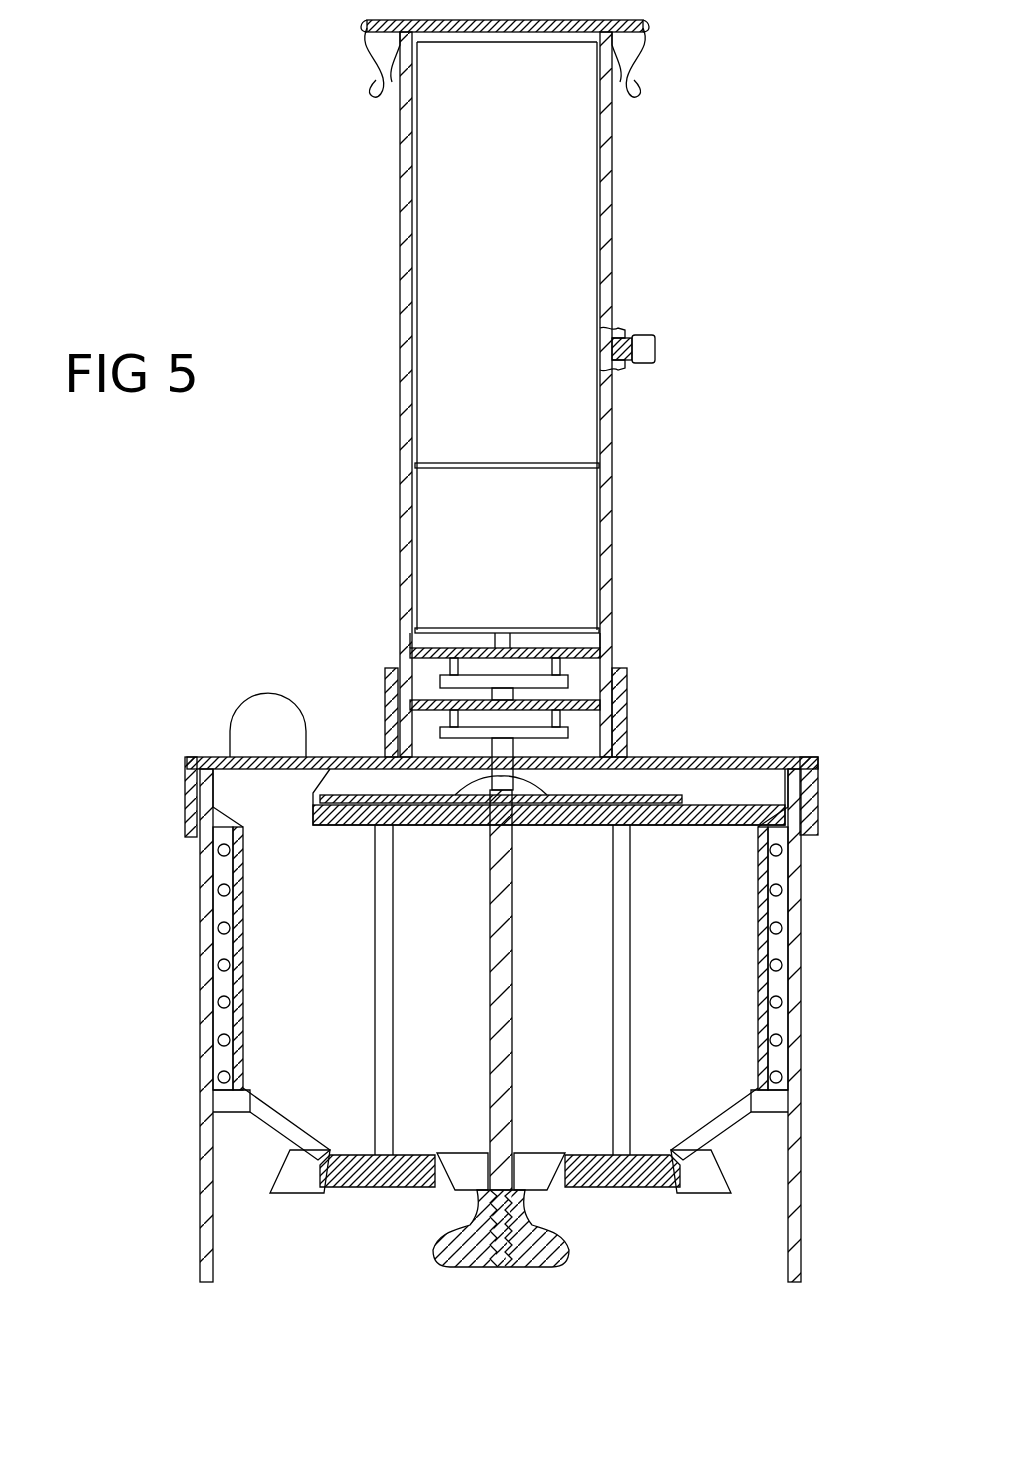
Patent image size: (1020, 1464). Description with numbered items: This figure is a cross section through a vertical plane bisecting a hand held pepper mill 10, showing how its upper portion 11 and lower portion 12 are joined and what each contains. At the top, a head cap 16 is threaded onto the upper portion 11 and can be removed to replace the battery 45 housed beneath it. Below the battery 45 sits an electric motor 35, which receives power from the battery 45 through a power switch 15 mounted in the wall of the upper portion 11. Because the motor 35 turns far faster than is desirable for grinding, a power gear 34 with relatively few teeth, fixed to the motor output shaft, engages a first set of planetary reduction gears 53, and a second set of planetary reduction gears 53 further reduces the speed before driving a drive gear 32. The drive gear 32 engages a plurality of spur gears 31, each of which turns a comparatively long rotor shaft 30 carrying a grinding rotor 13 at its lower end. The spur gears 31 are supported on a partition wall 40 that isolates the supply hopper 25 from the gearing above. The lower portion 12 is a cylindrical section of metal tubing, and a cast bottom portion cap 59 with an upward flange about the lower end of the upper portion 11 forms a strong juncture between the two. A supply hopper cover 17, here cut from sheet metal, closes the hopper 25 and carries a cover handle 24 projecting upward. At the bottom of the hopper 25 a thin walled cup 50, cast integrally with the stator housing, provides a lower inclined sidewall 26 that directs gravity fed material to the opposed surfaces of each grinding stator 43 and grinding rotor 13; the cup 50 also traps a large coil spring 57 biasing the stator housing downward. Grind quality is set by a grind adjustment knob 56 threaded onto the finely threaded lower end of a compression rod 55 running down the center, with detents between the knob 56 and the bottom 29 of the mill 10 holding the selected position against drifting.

The pepper mill 10 is at (803, 441).
The upper portion 11 is at (398, 243).
The lower portion 12 is at (803, 1085).
The grinding rotors 13 is at (392, 1180).
The power switch 15 is at (655, 350).
The head cap 16 is at (641, 38).
The supply hopper cover 17 is at (318, 765).
The cover handle 24 is at (240, 729).
The supply hopper 25 is at (245, 957).
The lower inclined sidewall 26 is at (245, 1043).
The bottom 29 is at (337, 1258).
The rotor shaft 30 is at (396, 957).
The spur gears 31 is at (412, 818).
The drive gear 32 is at (548, 812).
The power gear 34 is at (500, 646).
The electric motor 35 is at (511, 531).
The partition wall 40 is at (347, 812).
The grinding stator 43 is at (424, 1160).
The battery 45 is at (524, 268).
The thin walled cup 50 is at (712, 1125).
The planetary reduction gears 53 is at (538, 646).
The compression rod 55 is at (514, 952).
The grind adjustment knob 56 is at (455, 1262).
The coil spring 57 is at (218, 960).
The bottom portion cap 59 is at (742, 757).